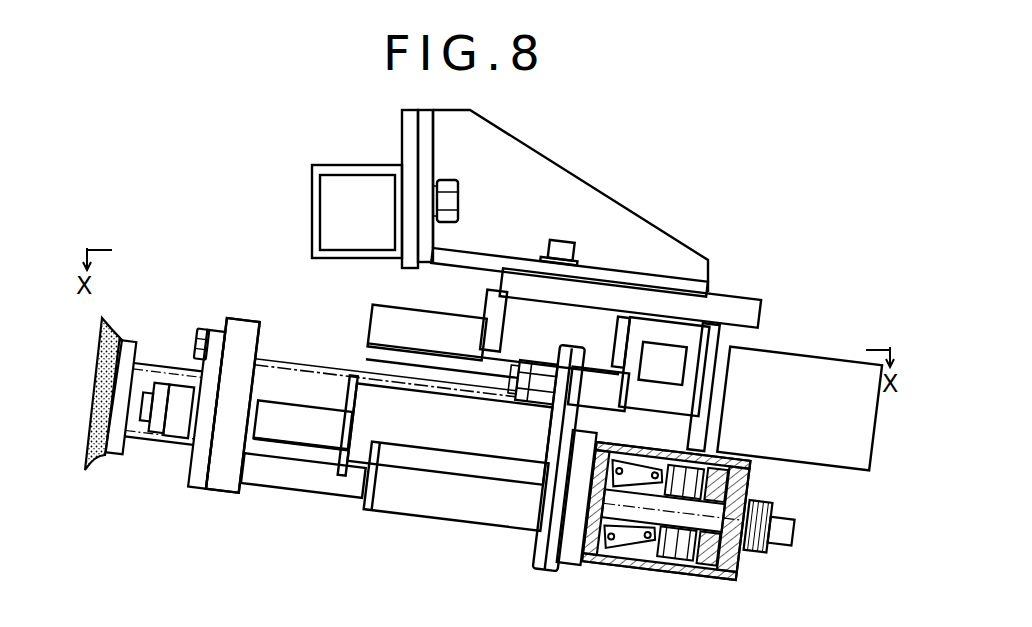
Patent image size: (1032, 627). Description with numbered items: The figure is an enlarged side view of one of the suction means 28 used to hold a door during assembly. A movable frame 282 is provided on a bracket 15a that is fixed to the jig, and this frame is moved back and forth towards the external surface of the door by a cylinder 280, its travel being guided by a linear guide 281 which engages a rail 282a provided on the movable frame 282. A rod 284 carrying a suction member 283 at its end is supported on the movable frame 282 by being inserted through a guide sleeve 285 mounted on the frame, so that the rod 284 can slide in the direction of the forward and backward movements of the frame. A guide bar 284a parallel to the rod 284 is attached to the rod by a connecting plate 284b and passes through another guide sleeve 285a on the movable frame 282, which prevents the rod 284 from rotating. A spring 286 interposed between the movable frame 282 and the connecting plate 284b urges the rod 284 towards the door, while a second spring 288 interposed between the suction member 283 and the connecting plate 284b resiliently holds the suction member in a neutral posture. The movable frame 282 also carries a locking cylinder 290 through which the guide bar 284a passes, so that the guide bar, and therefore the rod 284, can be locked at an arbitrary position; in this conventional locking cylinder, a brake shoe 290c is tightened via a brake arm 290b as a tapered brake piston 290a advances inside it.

The bracket 15a is at (602, 204).
The suction means 28 is at (228, 300).
The cylinder 280 is at (770, 367).
The linear guide 281 is at (600, 337).
The movable frame 282 is at (543, 565).
The rail 282a is at (388, 320).
The suction member 283 is at (105, 450).
The rod 284 is at (328, 437).
The guide bar 284a is at (265, 470).
The connecting plate 284b is at (225, 475).
The guide sleeve 285 is at (493, 447).
The guide sleeve 285a is at (395, 505).
The spring 286 is at (265, 350).
The spring 288 is at (197, 470).
The locking cylinder 290 is at (665, 578).
The tapered brake piston 290a is at (707, 578).
The brake arm 290b is at (649, 443).
The brake shoe 290c is at (607, 560).